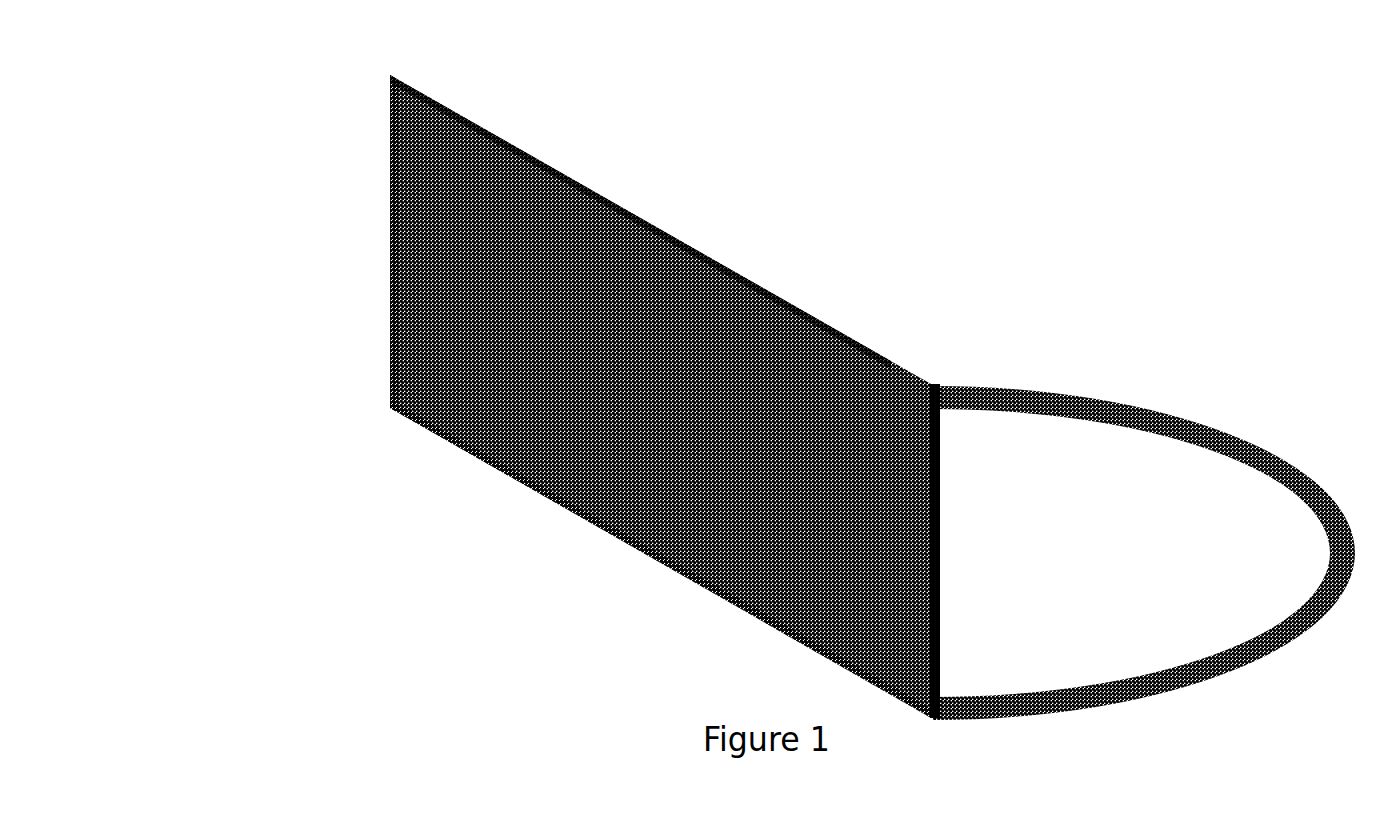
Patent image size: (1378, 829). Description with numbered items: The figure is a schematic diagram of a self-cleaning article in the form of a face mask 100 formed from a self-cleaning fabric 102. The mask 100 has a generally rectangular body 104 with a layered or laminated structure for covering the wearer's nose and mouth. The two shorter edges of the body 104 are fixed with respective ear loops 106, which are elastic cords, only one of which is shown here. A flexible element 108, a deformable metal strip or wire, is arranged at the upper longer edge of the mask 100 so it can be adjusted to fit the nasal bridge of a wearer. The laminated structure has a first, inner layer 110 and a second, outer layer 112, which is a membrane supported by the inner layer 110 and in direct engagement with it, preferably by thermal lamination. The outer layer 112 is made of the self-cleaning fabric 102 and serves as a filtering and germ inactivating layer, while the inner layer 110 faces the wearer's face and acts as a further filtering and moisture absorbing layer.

The face mask 100 is at (776, 383).
The self-cleaning fabric 102 is at (443, 118).
The body 104 is at (368, 250).
The ear loops 106 is at (1120, 412).
The flexible element 108 is at (827, 312).
The inner layer 110 is at (927, 543).
The outer layer 112 is at (603, 508).